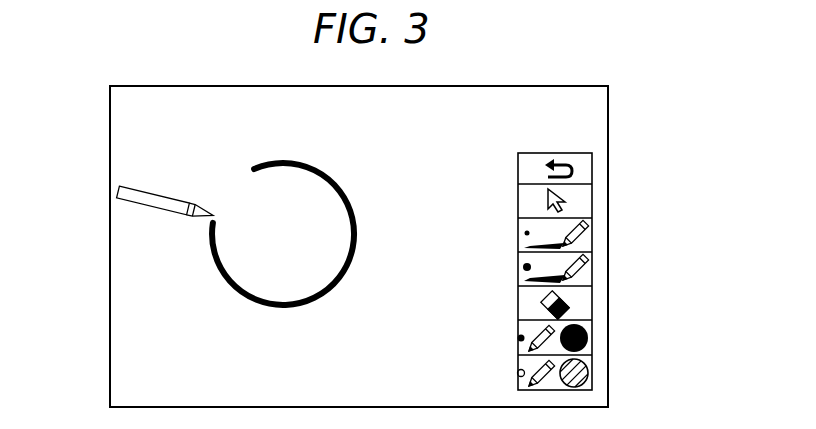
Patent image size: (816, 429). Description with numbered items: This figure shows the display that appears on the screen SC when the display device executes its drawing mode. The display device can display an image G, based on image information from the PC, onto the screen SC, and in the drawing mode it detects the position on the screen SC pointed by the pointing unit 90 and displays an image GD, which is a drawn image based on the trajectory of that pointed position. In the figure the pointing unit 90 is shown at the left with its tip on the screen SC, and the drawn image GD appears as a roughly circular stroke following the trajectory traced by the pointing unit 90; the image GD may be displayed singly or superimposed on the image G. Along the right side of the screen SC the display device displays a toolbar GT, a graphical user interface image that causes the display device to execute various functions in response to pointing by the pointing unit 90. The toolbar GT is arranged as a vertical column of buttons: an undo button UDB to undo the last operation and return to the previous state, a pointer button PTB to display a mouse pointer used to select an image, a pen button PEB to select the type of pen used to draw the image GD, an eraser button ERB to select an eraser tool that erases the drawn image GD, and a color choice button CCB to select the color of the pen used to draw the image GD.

The pointing unit 90 is at (118, 187).
The image (drawn image) GD is at (288, 151).
The toolbar GT is at (554, 146).
The screen SC is at (593, 122).
The image G is at (614, 133).
The undo button UDB is at (593, 167).
The pointer button PTB is at (593, 200).
The pen button PEB is at (593, 263).
The eraser button ERB is at (593, 303).
The color choice button CCB is at (593, 373).